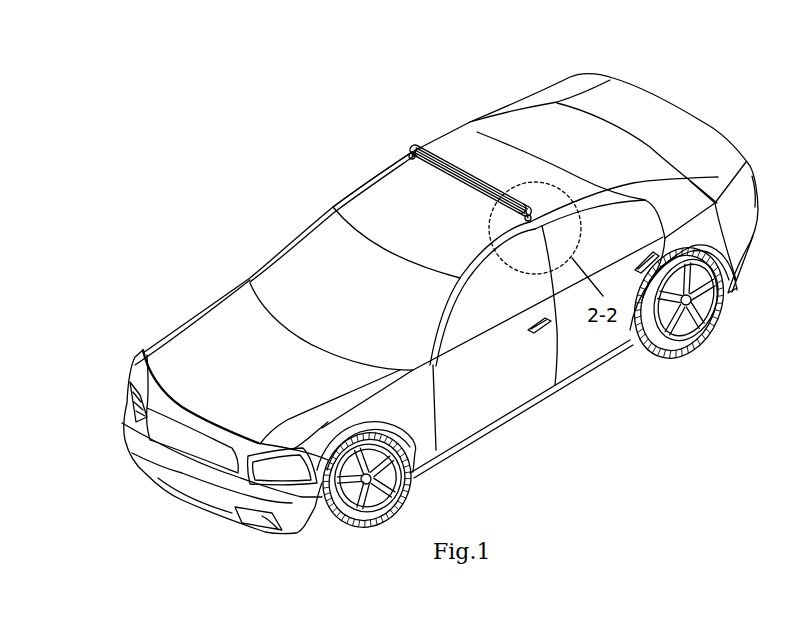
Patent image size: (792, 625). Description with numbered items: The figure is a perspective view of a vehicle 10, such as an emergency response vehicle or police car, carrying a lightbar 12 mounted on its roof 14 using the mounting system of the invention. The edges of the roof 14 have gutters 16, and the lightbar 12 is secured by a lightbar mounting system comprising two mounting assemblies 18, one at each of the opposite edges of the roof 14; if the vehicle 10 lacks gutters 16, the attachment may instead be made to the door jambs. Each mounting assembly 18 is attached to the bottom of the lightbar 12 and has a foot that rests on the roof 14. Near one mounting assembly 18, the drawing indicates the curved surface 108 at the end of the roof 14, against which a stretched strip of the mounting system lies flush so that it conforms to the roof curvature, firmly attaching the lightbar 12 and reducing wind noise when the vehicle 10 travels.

The vehicle 10 is at (565, 95).
The lightbar 12 is at (477, 178).
The roof 14 is at (394, 213).
The gutters 16 is at (636, 213).
The mounting assemblies 18 is at (410, 155).
The curved surface 108 is at (555, 212).